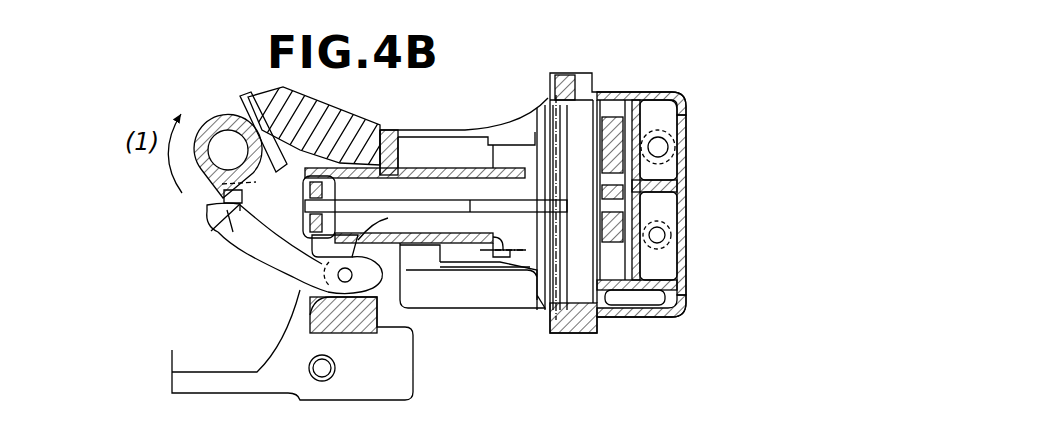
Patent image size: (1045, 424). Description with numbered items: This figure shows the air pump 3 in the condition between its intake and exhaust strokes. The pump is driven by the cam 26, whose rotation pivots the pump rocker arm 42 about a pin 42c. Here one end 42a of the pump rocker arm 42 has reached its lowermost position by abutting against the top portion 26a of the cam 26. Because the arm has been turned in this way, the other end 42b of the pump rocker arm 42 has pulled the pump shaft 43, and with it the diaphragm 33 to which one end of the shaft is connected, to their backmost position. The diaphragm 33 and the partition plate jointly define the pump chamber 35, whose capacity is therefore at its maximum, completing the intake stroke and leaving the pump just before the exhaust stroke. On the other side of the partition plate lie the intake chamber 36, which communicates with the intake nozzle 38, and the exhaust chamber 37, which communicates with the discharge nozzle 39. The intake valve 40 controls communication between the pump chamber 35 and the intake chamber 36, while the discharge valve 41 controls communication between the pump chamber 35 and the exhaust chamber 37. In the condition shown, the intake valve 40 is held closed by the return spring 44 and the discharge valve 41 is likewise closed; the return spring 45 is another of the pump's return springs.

The air pump 3 is at (678, 184).
The cam 26 is at (231, 116).
The top portion 26a is at (218, 234).
The diaphragm 33 is at (537, 108).
The pump chamber 35 is at (578, 123).
The intake chamber 36 is at (660, 262).
The exhaust chamber 37 is at (636, 106).
The intake nozzle 38 is at (670, 236).
The discharge nozzle 39 is at (678, 138).
The intake valve 40 is at (618, 226).
The discharge valve 41 is at (678, 164).
The pump rocker arm 42 is at (277, 280).
The one end 42a is at (207, 212).
The other end 42b is at (407, 245).
The pin 42c is at (300, 290).
The pump shaft 43 is at (460, 233).
The return spring 44 is at (620, 312).
The return spring 45 is at (612, 130).